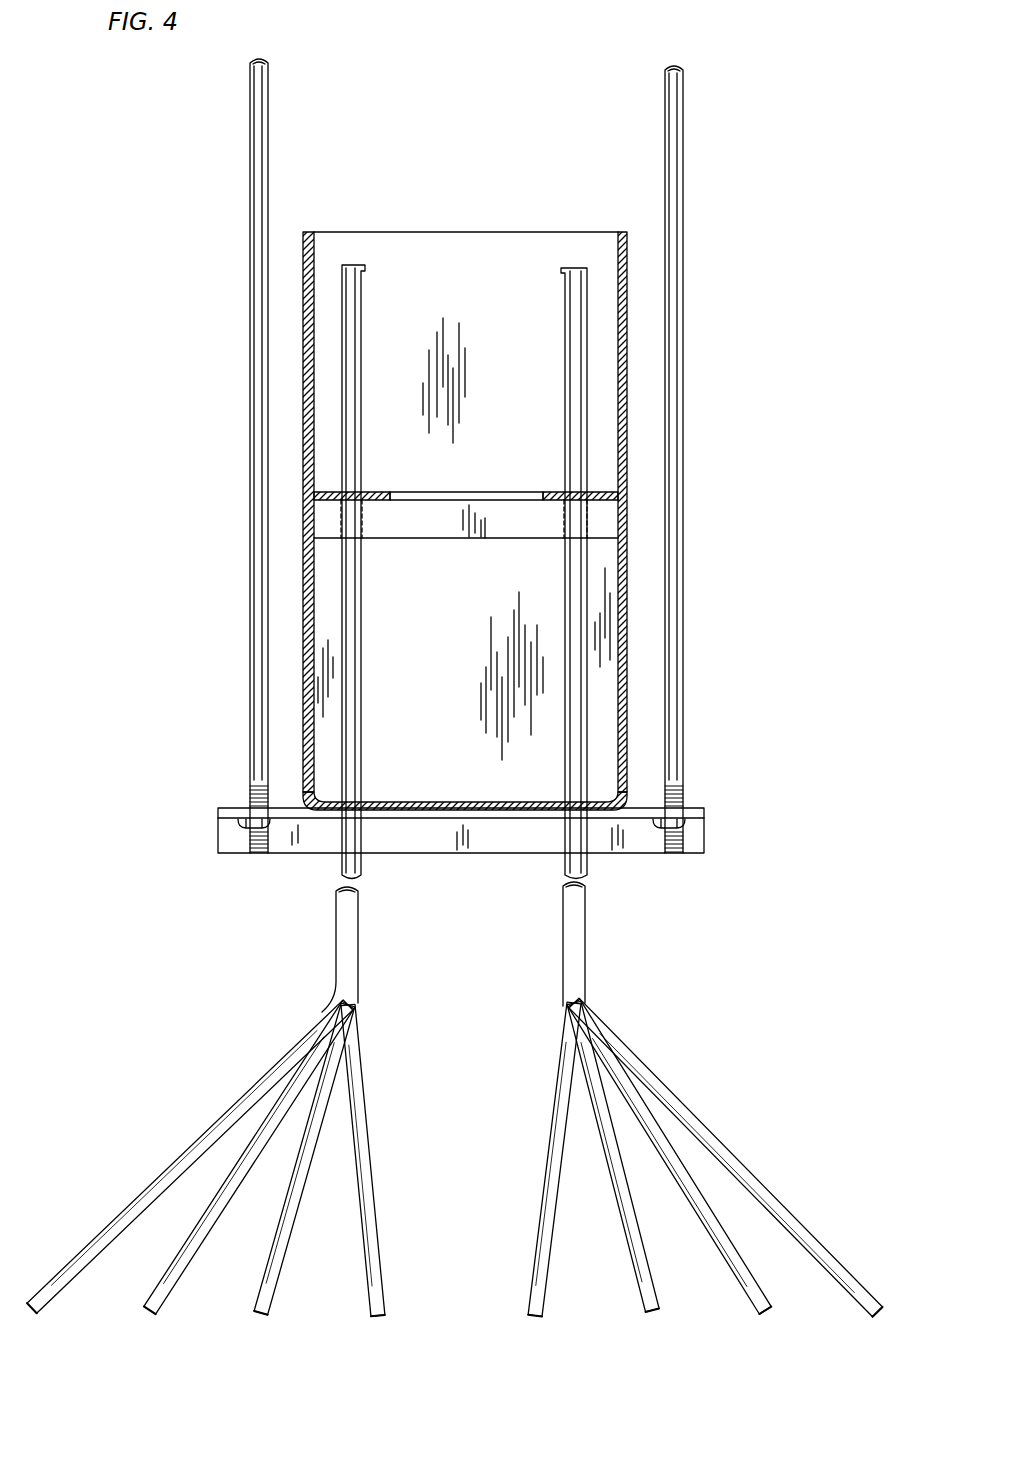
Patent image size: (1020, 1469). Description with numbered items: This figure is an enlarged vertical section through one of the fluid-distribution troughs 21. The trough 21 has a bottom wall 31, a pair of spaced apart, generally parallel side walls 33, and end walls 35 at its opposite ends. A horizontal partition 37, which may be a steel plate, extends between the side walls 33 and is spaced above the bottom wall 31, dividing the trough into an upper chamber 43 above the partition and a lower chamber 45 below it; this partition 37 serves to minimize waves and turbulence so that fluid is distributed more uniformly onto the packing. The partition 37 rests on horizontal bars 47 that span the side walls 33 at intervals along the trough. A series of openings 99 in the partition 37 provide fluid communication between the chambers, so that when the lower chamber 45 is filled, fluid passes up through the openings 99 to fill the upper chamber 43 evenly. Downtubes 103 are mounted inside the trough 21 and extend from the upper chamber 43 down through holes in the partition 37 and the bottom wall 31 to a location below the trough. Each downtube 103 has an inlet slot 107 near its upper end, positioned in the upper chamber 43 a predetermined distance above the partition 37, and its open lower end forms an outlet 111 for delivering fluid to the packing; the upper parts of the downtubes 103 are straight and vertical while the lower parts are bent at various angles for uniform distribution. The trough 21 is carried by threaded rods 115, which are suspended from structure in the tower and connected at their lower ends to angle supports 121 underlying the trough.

The trough 21 is at (465, 499).
The bottom wall 31 is at (460, 805).
The side walls 33 is at (303, 256).
The end walls 35 is at (418, 243).
The horizontal partition 37 is at (336, 488).
The upper chamber 43 is at (548, 247).
The lower chamber 45 is at (606, 721).
The horizontal bars 47 is at (470, 537).
The openings 99 is at (455, 495).
The downtubes 103 is at (298, 1078).
The slot 107 is at (366, 290).
The outlet 111 is at (876, 1320).
The threaded rods 115 is at (250, 136).
The angle supports 121 is at (704, 835).